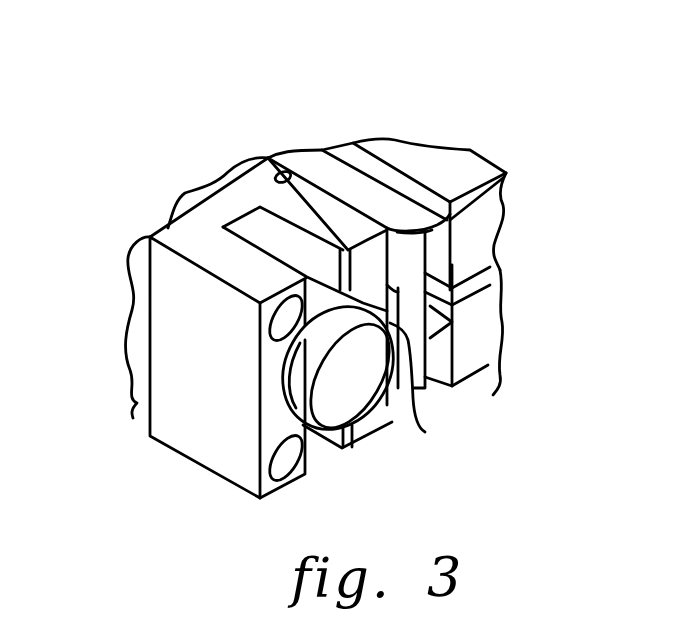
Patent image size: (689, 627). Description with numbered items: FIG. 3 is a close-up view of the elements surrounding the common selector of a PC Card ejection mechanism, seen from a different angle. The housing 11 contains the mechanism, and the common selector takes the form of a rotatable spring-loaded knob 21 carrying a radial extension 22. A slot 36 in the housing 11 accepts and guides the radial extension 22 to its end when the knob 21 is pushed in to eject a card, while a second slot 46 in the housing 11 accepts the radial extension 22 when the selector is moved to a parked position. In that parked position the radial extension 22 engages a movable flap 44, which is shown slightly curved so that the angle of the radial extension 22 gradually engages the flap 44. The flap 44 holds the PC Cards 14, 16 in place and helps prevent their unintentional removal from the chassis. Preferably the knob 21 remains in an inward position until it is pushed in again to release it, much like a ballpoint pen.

The housing 11 is at (137, 402).
The PC Card 14 is at (493, 228).
The PC Card 16 is at (493, 317).
The rotatable spring-loaded knob 21 is at (347, 397).
The radial extension 22 is at (425, 432).
The slot 36 is at (274, 238).
The movable flap 44 is at (420, 358).
The slot 46 is at (398, 284).